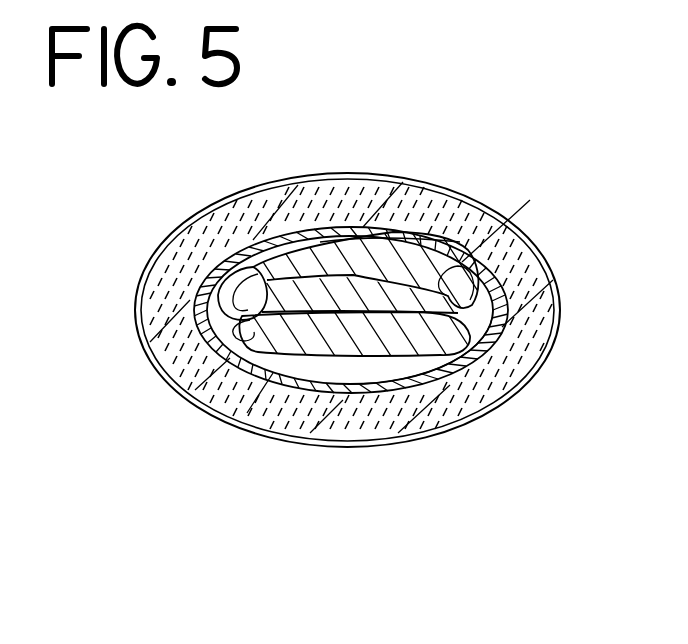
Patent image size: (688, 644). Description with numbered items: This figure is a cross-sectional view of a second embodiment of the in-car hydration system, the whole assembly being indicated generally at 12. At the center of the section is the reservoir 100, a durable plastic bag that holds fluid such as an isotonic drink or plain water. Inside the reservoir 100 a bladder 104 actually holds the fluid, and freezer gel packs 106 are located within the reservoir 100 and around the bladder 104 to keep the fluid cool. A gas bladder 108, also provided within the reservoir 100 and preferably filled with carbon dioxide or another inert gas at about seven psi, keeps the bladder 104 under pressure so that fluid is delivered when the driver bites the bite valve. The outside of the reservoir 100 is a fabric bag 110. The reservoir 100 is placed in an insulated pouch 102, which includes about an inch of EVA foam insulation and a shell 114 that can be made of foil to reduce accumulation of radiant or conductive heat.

The annular body 12 is at (188, 352).
The reservoir 100 is at (260, 255).
The insulated pouch 102 is at (137, 280).
The bladder 104 is at (500, 296).
The freezer gel packs 106 is at (420, 272).
The gas bladder 108 is at (470, 345).
The fabric bag 110 is at (312, 230).
The shell 114 is at (170, 237).